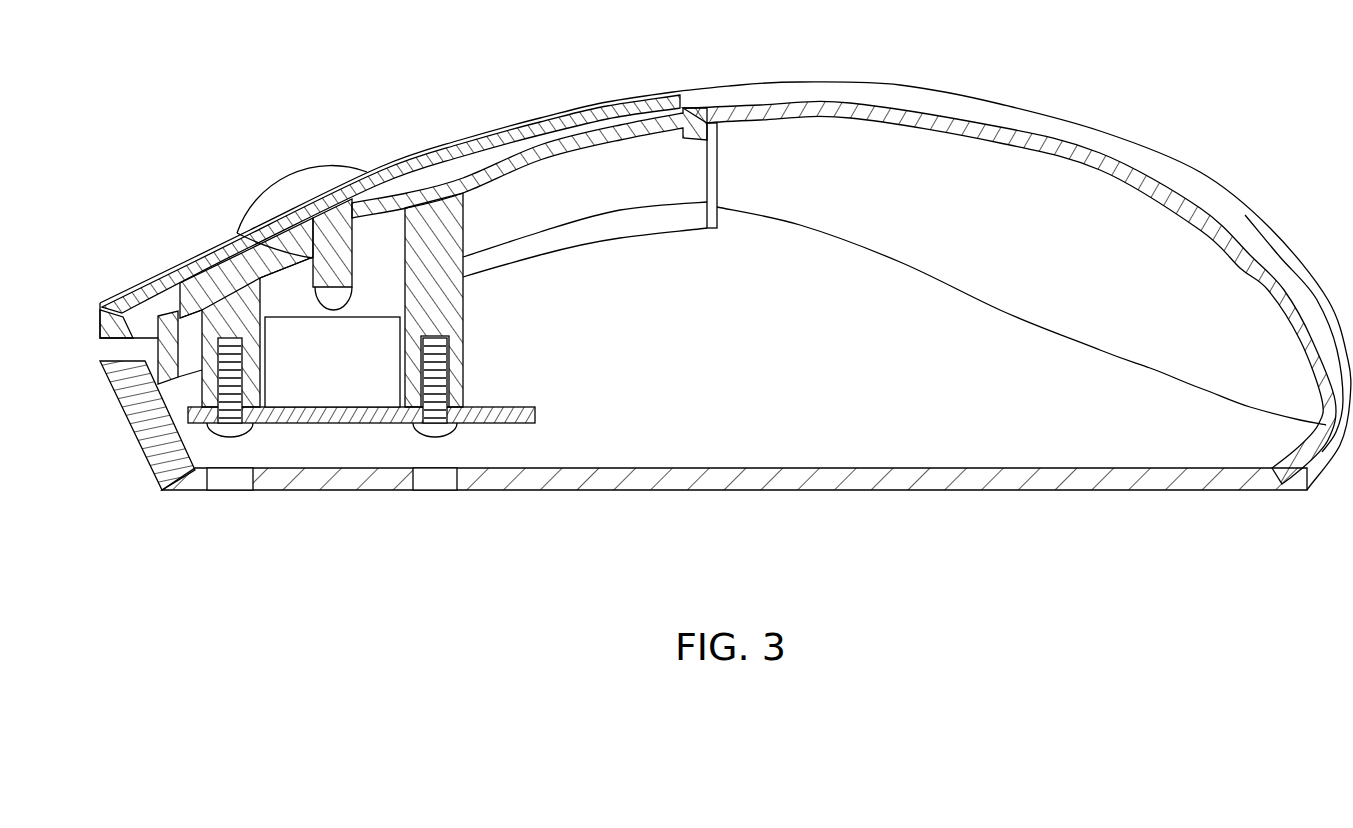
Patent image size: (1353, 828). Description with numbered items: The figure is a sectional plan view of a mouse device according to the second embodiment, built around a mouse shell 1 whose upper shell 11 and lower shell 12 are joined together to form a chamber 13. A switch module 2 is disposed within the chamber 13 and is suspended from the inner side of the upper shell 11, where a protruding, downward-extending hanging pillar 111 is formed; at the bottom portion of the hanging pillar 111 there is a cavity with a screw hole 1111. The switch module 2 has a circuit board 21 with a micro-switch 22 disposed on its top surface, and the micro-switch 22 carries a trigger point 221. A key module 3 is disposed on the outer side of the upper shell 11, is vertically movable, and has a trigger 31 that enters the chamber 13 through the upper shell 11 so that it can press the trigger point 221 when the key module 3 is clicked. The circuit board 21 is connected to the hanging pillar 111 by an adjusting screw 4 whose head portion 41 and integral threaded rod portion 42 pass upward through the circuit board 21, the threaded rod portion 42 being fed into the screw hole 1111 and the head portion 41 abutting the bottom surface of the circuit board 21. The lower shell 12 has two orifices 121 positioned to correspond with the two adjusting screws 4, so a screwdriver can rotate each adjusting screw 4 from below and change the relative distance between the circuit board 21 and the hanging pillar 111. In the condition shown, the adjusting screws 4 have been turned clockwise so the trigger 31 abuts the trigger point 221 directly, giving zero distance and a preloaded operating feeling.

The mouse shell 1 is at (850, 545).
The upper shell 11 is at (637, 145).
The hanging pillar 111 is at (470, 215).
The screw hole 1111 is at (450, 352).
The lower shell 12 is at (771, 478).
The orifice 121 is at (233, 485).
The chamber 13 is at (828, 397).
The switch module 2 is at (400, 543).
The circuit board 21 is at (388, 417).
The micro-switch 22 is at (328, 380).
The trigger point 221 is at (237, 233).
The key module 3 is at (398, 158).
The trigger 31 is at (333, 307).
The adjusting screw 4 is at (603, 353).
The head portion 41 is at (447, 437).
The threaded rod portion 42 is at (440, 380).